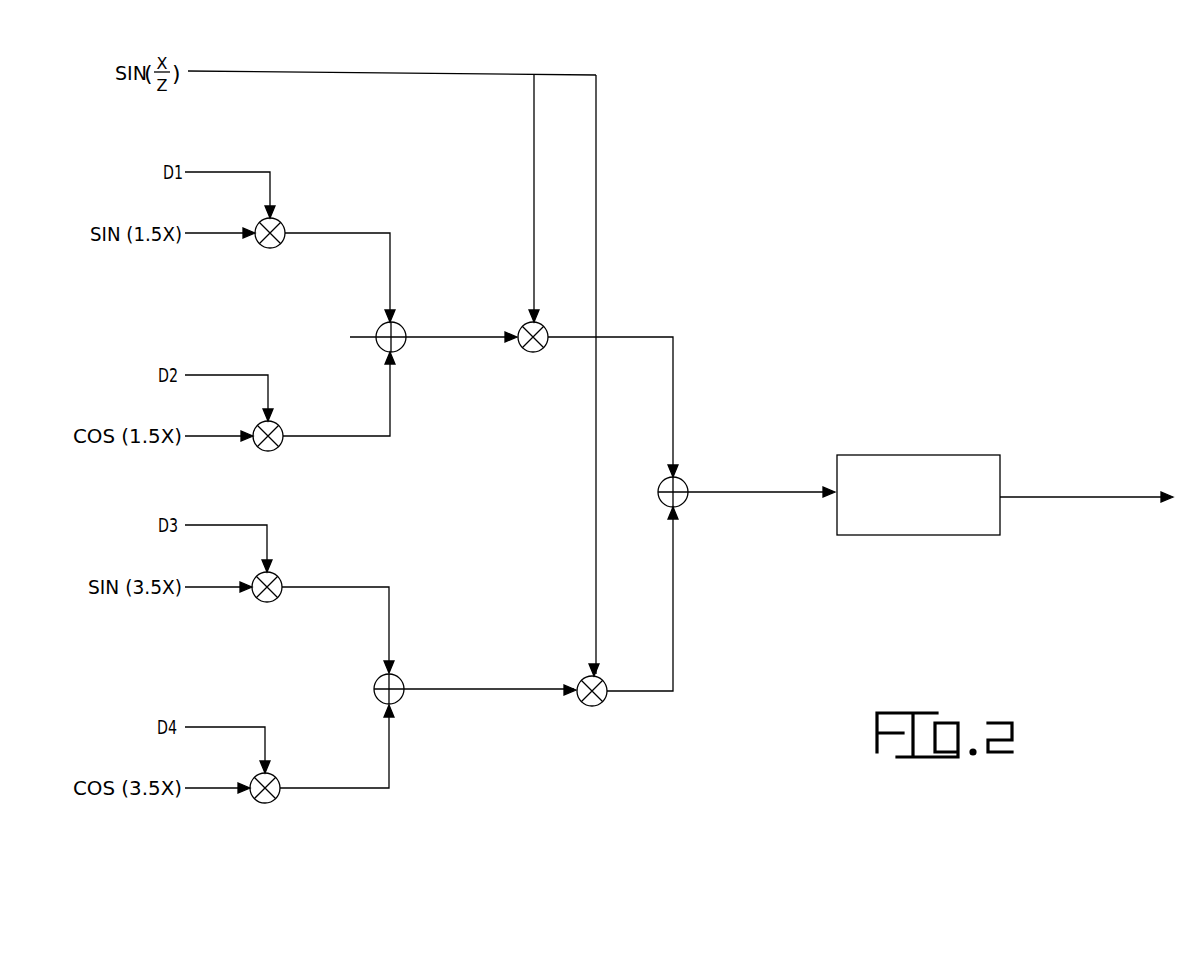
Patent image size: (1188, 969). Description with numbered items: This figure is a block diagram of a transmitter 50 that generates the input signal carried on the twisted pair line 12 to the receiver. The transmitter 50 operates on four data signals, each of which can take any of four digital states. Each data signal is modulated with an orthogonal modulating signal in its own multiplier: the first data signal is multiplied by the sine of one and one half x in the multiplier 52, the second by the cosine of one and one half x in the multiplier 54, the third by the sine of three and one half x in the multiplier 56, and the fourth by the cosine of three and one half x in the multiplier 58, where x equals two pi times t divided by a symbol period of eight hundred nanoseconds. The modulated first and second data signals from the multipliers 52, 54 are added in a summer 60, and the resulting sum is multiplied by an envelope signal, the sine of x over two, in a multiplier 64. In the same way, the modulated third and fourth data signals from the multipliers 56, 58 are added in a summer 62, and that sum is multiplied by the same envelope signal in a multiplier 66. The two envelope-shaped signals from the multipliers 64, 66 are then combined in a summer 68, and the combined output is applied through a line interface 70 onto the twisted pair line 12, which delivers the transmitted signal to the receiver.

The transmitter 50 is at (956, 251).
The multiplier 52 is at (285, 225).
The multiplier 54 is at (283, 428).
The multiplier 56 is at (281, 577).
The multiplier 58 is at (282, 783).
The summer 60 is at (405, 330).
The summer 62 is at (403, 682).
The multiplier 64 is at (528, 352).
The multiplier 66 is at (591, 707).
The summer 68 is at (685, 480).
The line interface 70 is at (957, 455).
The twisted pair line 12 is at (1097, 497).